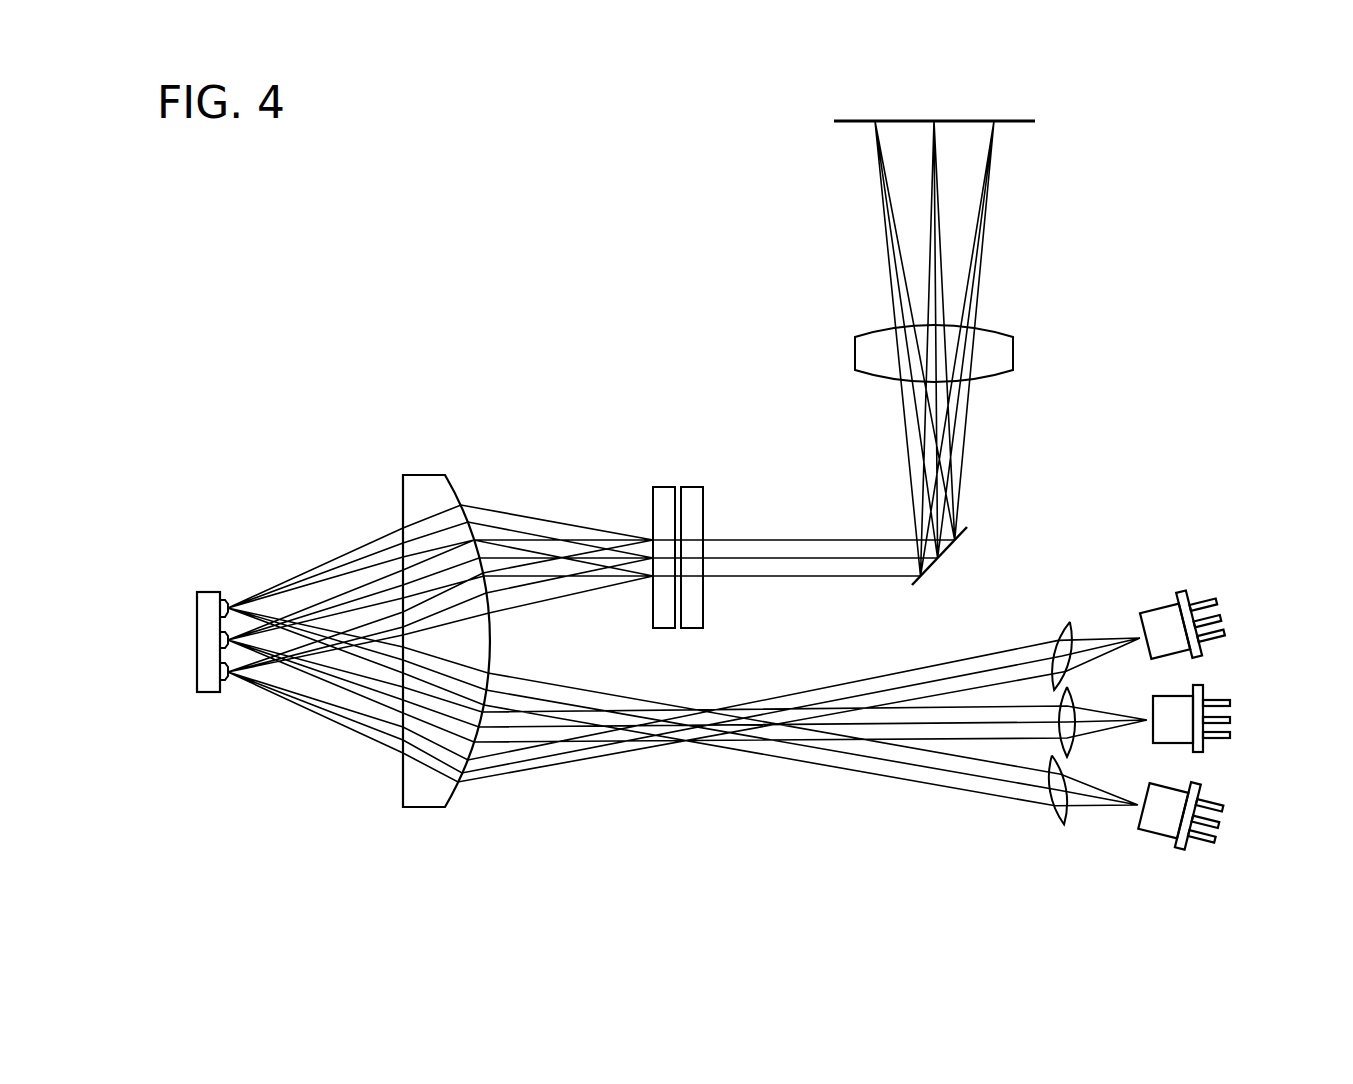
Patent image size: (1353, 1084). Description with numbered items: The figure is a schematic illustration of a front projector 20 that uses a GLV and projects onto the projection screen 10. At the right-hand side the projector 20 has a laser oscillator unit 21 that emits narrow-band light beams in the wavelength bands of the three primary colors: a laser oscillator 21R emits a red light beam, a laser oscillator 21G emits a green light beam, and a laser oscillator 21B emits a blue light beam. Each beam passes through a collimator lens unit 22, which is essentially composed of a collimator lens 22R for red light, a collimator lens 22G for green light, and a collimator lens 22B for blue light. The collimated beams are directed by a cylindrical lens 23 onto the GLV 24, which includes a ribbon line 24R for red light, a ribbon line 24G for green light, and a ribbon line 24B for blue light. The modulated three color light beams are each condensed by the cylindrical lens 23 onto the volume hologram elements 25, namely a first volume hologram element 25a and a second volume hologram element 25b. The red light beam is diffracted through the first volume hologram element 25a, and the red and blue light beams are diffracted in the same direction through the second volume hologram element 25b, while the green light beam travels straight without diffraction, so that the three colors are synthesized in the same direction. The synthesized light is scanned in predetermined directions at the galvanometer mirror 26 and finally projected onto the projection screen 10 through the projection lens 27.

The projection screen 10 is at (1037, 121).
The projector 20 is at (540, 283).
The laser oscillator unit 21 is at (1232, 890).
The laser oscillator 21B is at (1164, 620).
The laser oscillator 21G is at (1208, 692).
The laser oscillator 21R is at (1155, 825).
The collimator lens unit 22 is at (1092, 890).
The collimator lens 22B is at (1054, 628).
The collimator lens 22G is at (1073, 745).
The collimator lens 22R is at (1055, 820).
The cylindrical lens 23 is at (424, 490).
The GLV 24 is at (209, 600).
The ribbon line 24R is at (229, 598).
The ribbon line 24G is at (197, 646).
The ribbon line 24B is at (227, 693).
The volume hologram elements 25 is at (740, 420).
The first volume hologram element 25a is at (663, 498).
The second volume hologram element 25b is at (692, 496).
The galvanometer mirror 26 is at (968, 530).
The projection lens 27 is at (1002, 353).